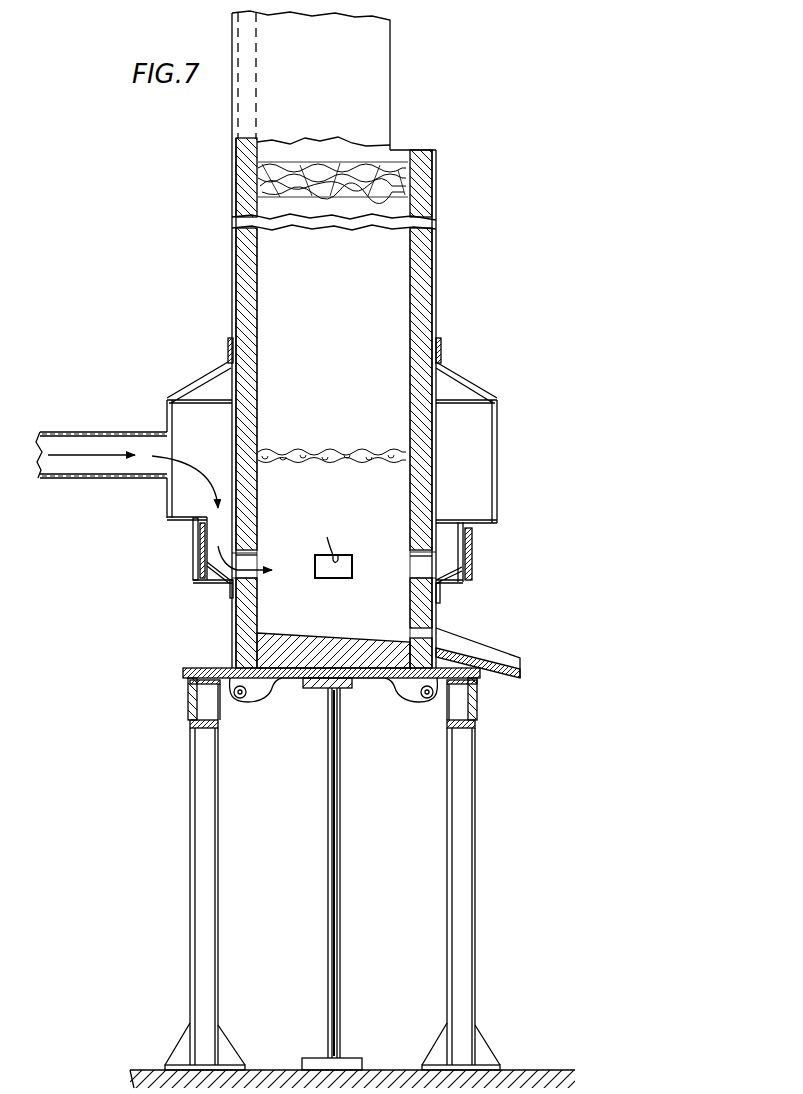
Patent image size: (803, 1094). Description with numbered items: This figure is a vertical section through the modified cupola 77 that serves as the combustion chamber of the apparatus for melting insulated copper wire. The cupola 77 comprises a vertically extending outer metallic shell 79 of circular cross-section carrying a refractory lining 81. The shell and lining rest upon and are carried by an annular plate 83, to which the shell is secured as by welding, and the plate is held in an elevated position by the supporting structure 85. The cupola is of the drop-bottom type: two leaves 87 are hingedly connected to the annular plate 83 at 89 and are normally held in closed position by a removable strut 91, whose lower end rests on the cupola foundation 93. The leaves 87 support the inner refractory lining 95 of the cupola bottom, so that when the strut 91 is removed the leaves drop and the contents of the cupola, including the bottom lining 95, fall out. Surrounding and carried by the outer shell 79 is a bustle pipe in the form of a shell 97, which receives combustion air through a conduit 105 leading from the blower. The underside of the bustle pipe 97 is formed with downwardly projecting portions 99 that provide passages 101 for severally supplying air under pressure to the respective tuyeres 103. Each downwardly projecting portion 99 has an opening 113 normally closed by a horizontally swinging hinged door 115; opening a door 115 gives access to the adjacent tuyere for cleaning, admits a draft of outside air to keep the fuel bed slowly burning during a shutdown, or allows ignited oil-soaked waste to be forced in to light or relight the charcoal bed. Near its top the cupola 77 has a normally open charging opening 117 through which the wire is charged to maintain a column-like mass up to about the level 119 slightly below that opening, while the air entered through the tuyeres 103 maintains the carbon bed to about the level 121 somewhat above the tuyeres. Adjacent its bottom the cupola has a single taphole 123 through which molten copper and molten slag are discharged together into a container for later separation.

The cupola 77 is at (438, 255).
The outer metallic shell 79 is at (231, 256).
The refractory lining 81 is at (258, 283).
The annular plate 83 is at (198, 667).
The supporting structure 85 is at (190, 762).
The leaves 87 is at (303, 683).
The hinge connection 89 is at (239, 700).
The removable strut 91 is at (341, 851).
The cupola foundation 93 is at (143, 1068).
The inner refractory lining of the cupola bottom 95 is at (313, 633).
The bustle pipe shell 97 is at (497, 434).
The downwardly projecting portions 99 is at (208, 516).
The passages 101 is at (225, 540).
The tuyeres 103 is at (252, 563).
The conduit 105 is at (110, 482).
The opening 113 is at (193, 540).
The hinged door 115 is at (200, 553).
The charging opening 117 is at (396, 84).
The level of the wire mass 119 is at (322, 164).
The level of the carbon bed 121 is at (314, 451).
The taphole 123 is at (424, 637).